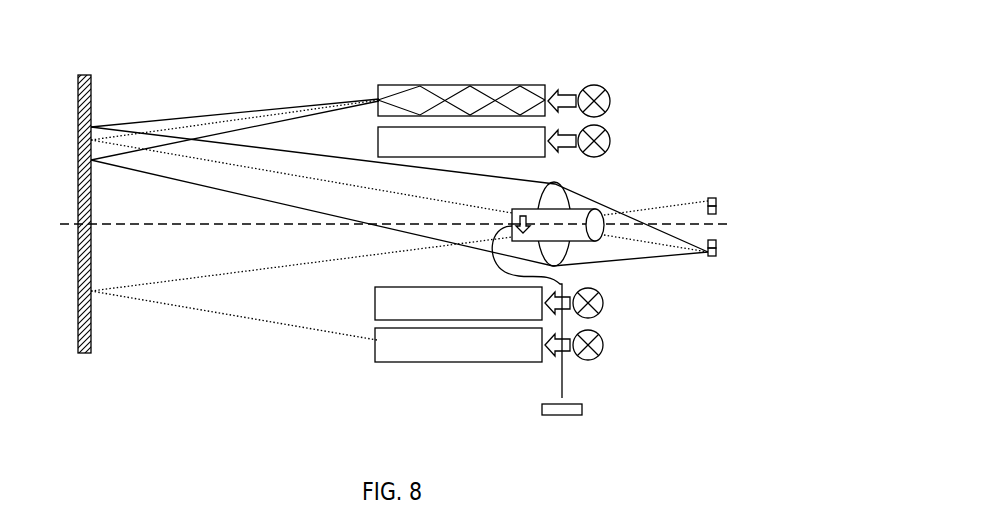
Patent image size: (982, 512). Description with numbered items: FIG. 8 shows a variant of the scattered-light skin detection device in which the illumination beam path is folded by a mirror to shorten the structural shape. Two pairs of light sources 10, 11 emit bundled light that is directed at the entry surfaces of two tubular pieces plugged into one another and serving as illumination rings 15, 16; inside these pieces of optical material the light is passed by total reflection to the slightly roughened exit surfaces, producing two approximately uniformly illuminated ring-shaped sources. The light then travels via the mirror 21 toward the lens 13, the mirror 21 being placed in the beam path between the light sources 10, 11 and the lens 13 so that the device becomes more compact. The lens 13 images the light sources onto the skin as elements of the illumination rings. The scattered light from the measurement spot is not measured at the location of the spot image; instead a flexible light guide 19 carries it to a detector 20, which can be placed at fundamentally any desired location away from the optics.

The light source 10 is at (613, 141).
The light source 11 is at (613, 101).
The lens 13 is at (554, 191).
The illumination ring 15 is at (374, 140).
The illumination ring 16 is at (374, 96).
The flexible light guide 19 is at (566, 381).
The detector 20 is at (589, 408).
The mirror 21 is at (81, 362).